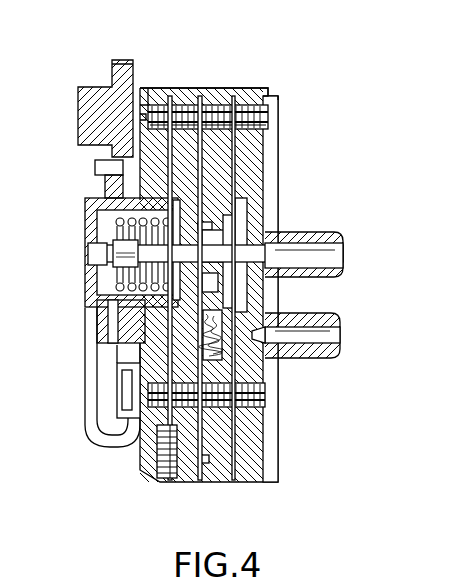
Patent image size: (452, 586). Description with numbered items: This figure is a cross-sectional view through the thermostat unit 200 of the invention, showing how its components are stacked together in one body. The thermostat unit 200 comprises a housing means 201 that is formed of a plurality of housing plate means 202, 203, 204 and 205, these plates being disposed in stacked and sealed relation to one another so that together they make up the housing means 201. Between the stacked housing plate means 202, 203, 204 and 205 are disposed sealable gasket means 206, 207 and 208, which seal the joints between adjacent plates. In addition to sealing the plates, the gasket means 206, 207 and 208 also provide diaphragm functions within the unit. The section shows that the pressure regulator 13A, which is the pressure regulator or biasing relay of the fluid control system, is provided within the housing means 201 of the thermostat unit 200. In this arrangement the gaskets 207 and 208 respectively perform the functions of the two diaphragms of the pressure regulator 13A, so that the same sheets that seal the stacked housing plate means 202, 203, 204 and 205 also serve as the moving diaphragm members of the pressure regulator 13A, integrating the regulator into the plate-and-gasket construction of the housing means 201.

The thermostat unit 200 is at (268, 73).
The housing means 201 is at (278, 95).
The housing plate means 202 is at (158, 87).
The housing plate means 203 is at (187, 90).
The housing plate means 204 is at (222, 483).
The housing plate means 205 is at (253, 483).
The sealable gasket means 206 is at (167, 196).
The sealable gasket means 207 is at (190, 483).
The sealable gasket means 208 is at (235, 448).
The pressure regulator 13A is at (87, 318).